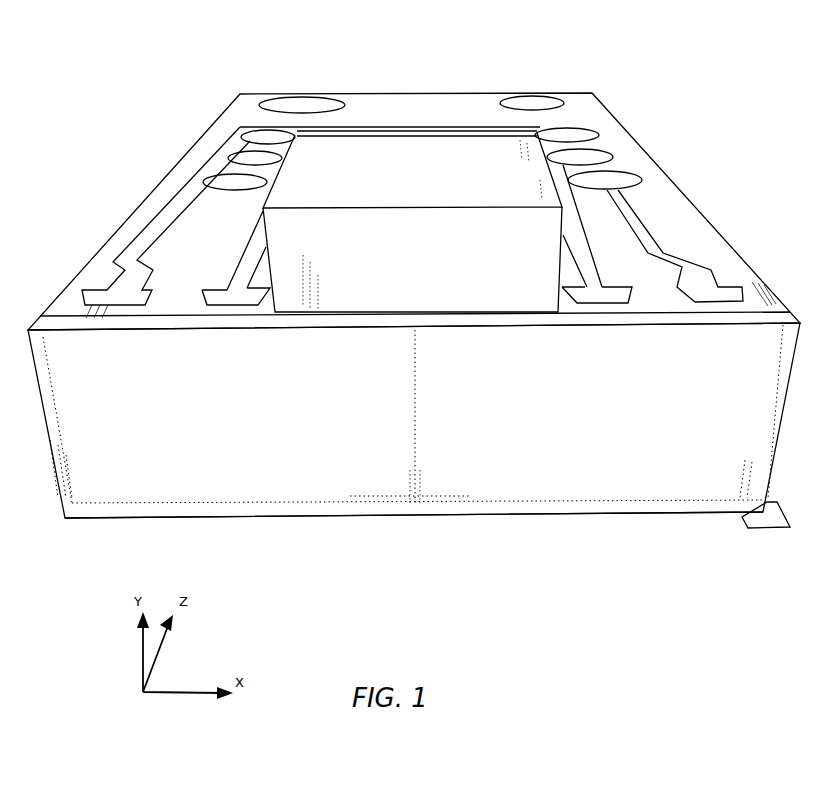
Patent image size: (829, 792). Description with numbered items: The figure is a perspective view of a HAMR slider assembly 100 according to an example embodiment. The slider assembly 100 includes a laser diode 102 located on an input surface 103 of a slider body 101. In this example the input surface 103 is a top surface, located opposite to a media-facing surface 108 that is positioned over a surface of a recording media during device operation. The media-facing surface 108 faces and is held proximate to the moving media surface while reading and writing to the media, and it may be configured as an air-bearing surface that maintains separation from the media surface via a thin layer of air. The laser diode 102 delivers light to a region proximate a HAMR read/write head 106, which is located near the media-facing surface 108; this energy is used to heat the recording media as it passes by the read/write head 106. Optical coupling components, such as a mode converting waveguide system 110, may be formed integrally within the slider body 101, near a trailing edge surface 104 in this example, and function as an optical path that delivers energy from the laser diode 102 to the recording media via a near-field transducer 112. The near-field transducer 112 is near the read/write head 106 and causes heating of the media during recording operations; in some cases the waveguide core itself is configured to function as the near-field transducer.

The HAMR slider assembly 100 is at (603, 37).
The slider body 101 is at (213, 123).
The laser diode 102 is at (372, 143).
The input surface 103 is at (95, 273).
The trailing edge surface 104 is at (125, 492).
The HAMR read/write head 106 is at (422, 500).
The media-facing surface 108 is at (782, 530).
The mode converting waveguide system 110 is at (415, 398).
The near-field transducer 112 is at (412, 500).